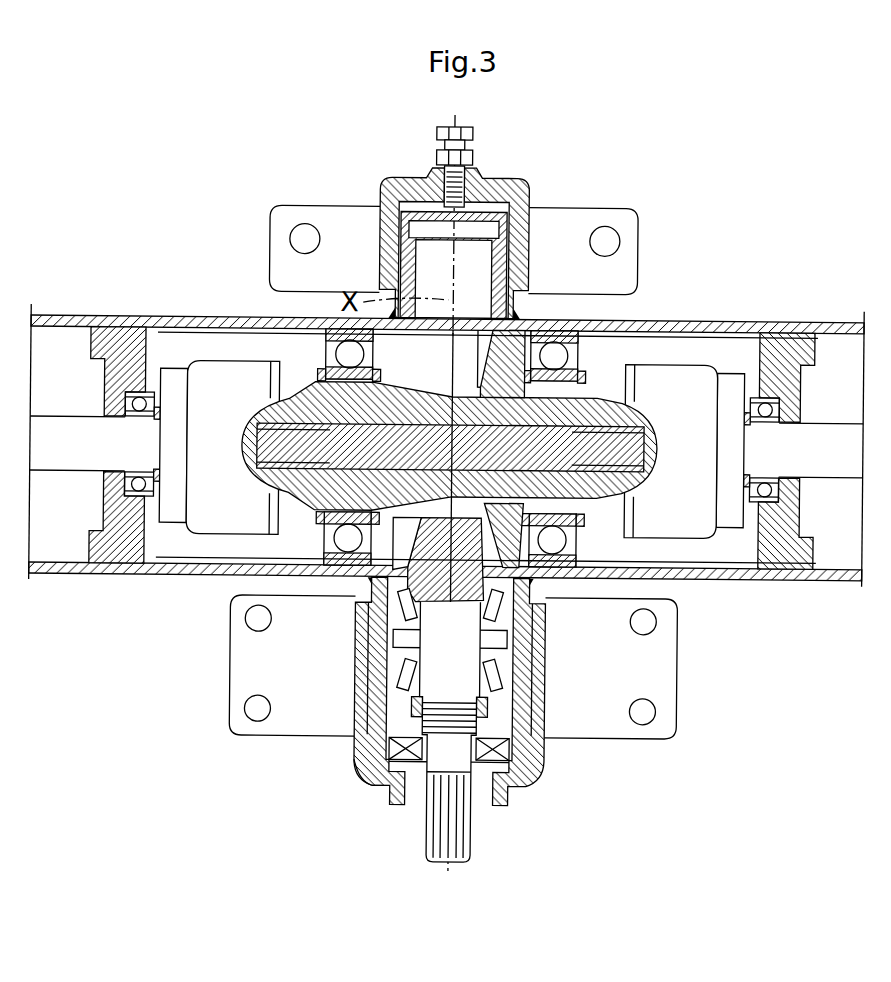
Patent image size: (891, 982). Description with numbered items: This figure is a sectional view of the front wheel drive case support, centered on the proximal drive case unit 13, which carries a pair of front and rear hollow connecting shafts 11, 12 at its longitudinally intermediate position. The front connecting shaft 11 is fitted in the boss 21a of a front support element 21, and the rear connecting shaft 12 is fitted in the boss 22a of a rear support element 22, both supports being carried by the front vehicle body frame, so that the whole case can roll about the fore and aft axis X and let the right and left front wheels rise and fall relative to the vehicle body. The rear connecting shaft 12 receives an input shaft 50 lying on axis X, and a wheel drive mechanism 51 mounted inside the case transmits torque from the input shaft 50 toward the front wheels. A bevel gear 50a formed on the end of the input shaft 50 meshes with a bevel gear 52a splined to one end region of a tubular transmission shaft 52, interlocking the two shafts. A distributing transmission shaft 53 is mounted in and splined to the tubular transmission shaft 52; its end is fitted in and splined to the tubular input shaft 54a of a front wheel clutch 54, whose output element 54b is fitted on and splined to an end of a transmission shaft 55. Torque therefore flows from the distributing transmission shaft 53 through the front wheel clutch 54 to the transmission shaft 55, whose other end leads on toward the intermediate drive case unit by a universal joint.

The front connecting shaft 11 is at (514, 243).
The rear connecting shaft 12 is at (520, 720).
The proximal drive case unit 13 is at (832, 319).
The front support element 21 is at (271, 233).
The boss 21a is at (392, 182).
The rear support element 22 is at (233, 690).
The boss 22a is at (372, 787).
The input shaft 50 is at (433, 827).
The bevel gear 50a is at (372, 592).
The wheel drive mechanism 51 is at (727, 553).
The tubular transmission shaft 52 is at (314, 506).
The bevel gear 52a is at (568, 580).
The distributing transmission shaft 53 is at (417, 437).
The front wheel clutch 54 is at (460, 442).
The tubular input shaft 54a is at (296, 398).
The output element 54b is at (213, 524).
The transmission shaft 55 is at (62, 463).